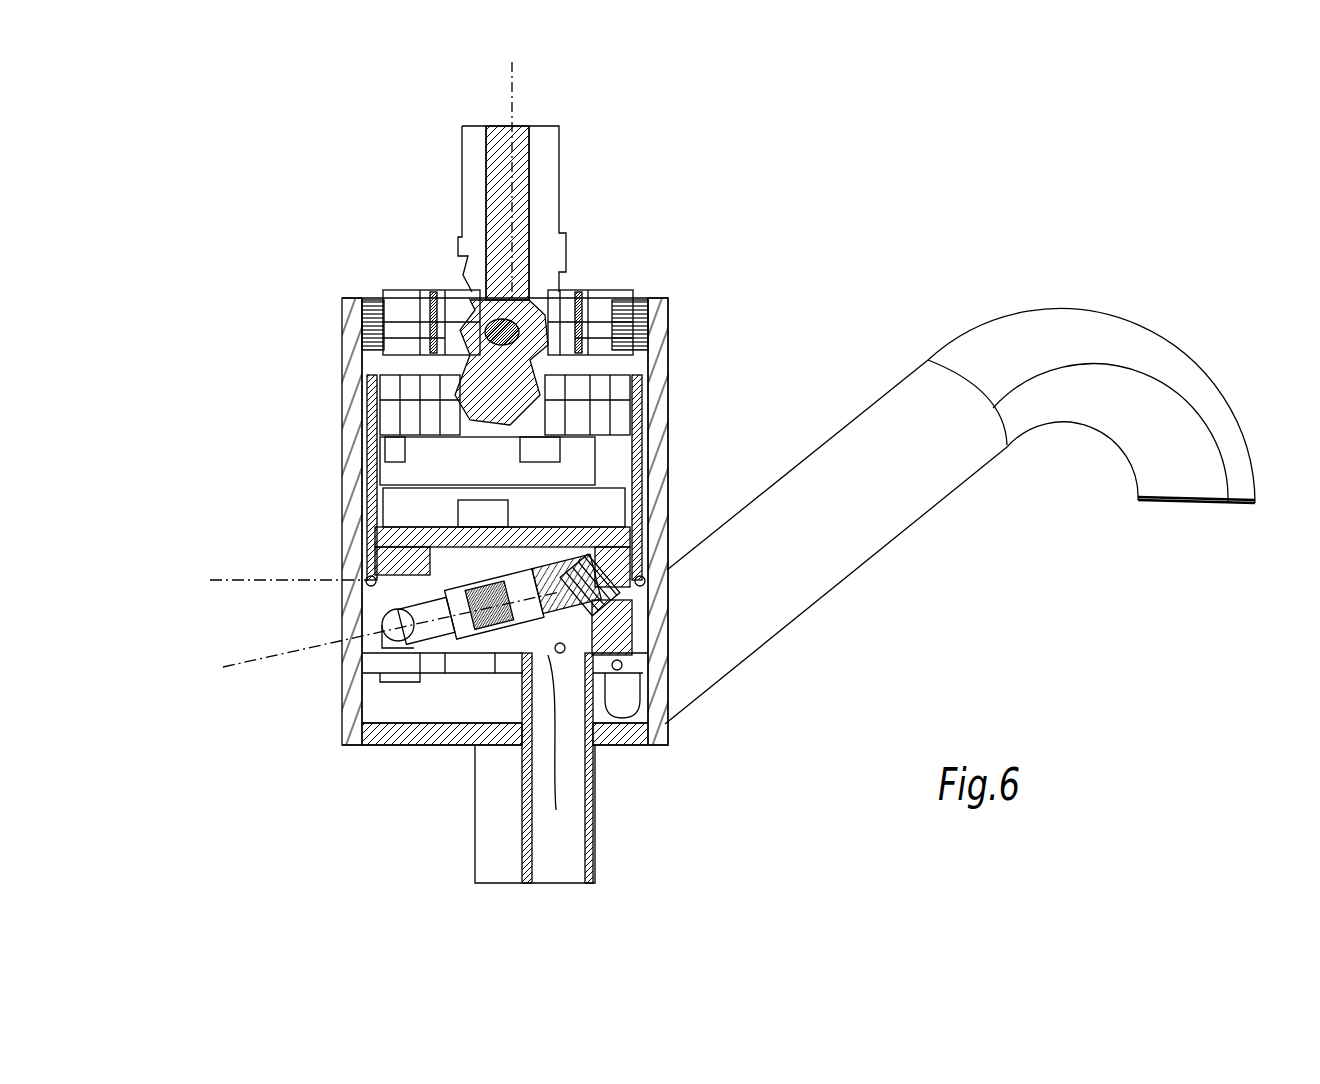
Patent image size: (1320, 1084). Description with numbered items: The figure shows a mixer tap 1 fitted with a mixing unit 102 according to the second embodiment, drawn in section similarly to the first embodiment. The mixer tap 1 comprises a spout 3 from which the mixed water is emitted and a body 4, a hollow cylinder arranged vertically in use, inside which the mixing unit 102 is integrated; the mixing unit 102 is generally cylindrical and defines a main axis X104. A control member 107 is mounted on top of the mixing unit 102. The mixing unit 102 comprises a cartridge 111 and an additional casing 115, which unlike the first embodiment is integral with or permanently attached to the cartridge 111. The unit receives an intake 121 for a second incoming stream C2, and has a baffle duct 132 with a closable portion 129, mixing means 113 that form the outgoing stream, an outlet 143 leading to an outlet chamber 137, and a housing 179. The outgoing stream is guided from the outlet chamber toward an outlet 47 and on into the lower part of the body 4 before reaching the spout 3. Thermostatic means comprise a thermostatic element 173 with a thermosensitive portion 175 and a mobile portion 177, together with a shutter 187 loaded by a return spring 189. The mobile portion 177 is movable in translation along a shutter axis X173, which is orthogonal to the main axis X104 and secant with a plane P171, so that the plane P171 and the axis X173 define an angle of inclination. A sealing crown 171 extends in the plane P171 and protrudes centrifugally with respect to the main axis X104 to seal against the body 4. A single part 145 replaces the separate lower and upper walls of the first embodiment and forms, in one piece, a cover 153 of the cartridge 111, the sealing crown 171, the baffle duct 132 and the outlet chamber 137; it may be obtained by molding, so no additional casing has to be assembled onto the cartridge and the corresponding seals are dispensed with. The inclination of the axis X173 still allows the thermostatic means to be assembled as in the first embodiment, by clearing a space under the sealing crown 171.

The mixer tap 1 is at (776, 139).
The spout 3 is at (1062, 335).
The body 4 is at (672, 362).
The outlet 47 is at (470, 668).
The mixing unit 102 is at (391, 478).
The control member 107 is at (551, 170).
The cartridge 111 is at (363, 383).
The mixing means 113 is at (587, 463).
The additional casing 115 is at (370, 567).
The intake 121 is at (557, 667).
The closable portion 129 is at (600, 497).
The baffle duct 132 is at (630, 640).
The outlet chamber 137 is at (400, 650).
The outlet 143 is at (473, 533).
The single part 145 is at (667, 549).
The cover 153 is at (640, 398).
The sealing crown 171 is at (367, 585).
The thermostatic element 173 is at (400, 690).
The thermosensitive portion 175 is at (420, 600).
The mobile portion 177 is at (500, 675).
The housing 179 is at (523, 745).
The shutter 187 is at (548, 745).
The return spring 189 is at (640, 548).
The main axis X104 is at (538, 181).
The plane P171 is at (256, 578).
The shutter axis X173 is at (358, 643).
The second incoming stream C2 is at (541, 562).